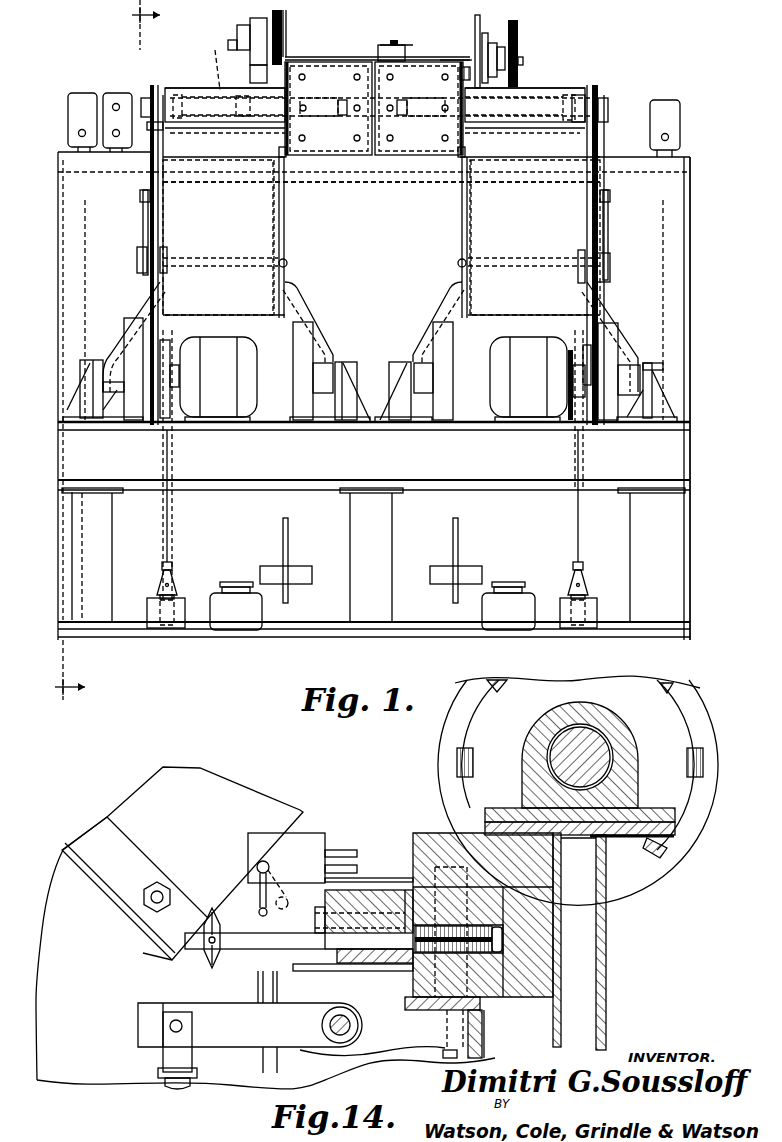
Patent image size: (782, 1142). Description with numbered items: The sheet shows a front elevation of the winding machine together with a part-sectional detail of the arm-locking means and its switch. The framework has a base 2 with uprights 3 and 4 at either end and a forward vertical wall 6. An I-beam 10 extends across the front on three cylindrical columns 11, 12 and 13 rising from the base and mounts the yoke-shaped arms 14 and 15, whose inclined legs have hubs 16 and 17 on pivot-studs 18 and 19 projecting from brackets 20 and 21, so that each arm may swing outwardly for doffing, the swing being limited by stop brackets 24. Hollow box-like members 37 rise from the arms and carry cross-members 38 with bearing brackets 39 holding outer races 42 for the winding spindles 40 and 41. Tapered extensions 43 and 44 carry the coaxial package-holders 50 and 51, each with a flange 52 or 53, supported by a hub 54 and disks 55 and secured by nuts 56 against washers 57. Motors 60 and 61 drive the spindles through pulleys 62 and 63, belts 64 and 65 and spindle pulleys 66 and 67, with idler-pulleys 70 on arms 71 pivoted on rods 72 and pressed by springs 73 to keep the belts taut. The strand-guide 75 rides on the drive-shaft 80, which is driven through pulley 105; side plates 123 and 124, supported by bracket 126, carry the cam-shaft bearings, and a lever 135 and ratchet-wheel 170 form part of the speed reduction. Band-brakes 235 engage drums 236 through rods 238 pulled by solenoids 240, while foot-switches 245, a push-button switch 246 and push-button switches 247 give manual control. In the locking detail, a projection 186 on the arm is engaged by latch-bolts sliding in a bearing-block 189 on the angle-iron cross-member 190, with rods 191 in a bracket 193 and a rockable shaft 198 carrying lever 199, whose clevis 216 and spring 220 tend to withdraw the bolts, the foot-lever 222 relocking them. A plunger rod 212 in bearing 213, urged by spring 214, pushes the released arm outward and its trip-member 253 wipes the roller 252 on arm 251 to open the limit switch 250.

In FIG. 1, the base 2 is at (300, 644).
In FIG. 1, the upright 3 is at (59, 364).
In FIG. 1, the upright 4 is at (690, 325).
In FIG. 1, the forward vertical wall 6 is at (100, 270).
In FIG. 1, the I-beam 10 is at (283, 474).
In FIG. 1, the cylindrical column 11 is at (100, 571).
In FIG. 1, the cylindrical column 12 is at (386, 562).
In FIG. 1, the cylindrical column 13 is at (640, 560).
In FIG. 1, the yoke-shaped arm 14 is at (460, 233).
In FIG. 1, the yoke-shaped arm 15 is at (288, 238).
In FIG. 14, the yoke-shaped arm 15 is at (608, 982).
In FIG. 1, the hub 16 is at (420, 355).
In FIG. 1, the hub 17 is at (118, 348).
In FIG. 1, the pivot-stud 18 is at (430, 390).
In FIG. 1, the pivot-stud 19 is at (112, 422).
In FIG. 1, the bracket 20 is at (398, 432).
In FIG. 1, the bracket 21 is at (90, 405).
In FIG. 1, the stop bracket 24 is at (133, 320).
In FIG. 1, the hollow box-like sheet-metal member 37 is at (284, 211).
In FIG. 14, the hollow box-like sheet-metal member 37 is at (607, 943).
In FIG. 1, the cross-member 38 is at (245, 130).
In FIG. 14, the cross-member 38 is at (683, 857).
In FIG. 1, the bearing bracket 39 is at (192, 90).
In FIG. 14, the bearing bracket 39 is at (620, 735).
In FIG. 1, the winding spindle 40 is at (577, 95).
In FIG. 1, the winding spindle 41 is at (236, 94).
In FIG. 14, the winding spindle 41 is at (598, 770).
In FIG. 1, the outer race 42 is at (172, 95).
In FIG. 1, the tapered extension 43 is at (445, 105).
In FIG. 1, the tapered extension 44 is at (313, 105).
In FIG. 1, the package-holder 50 is at (412, 143).
In FIG. 14, the package-holder 50 is at (712, 716).
In FIG. 1, the package-holder 51 is at (342, 142).
In FIG. 1, the flange 52 is at (461, 157).
In FIG. 14, the flange 52 is at (712, 758).
In FIG. 1, the flange 53 is at (285, 157).
In FIG. 1, the hub 54 is at (340, 112).
In FIG. 1, the disk 55 is at (316, 70).
In FIG. 1, the nut 56 is at (346, 113).
In FIG. 1, the washer 57 is at (343, 100).
In FIG. 1, the electric motor 60 is at (493, 400).
In FIG. 1, the electric motor 61 is at (256, 401).
In FIG. 1, the pulley 62 is at (585, 348).
In FIG. 1, the pulley 63 is at (147, 430).
In FIG. 1, the belt 64 is at (590, 233).
In FIG. 1, the belt 65 is at (159, 236).
In FIG. 1, the pulley 66 is at (606, 100).
In FIG. 1, the pulley 67 is at (152, 130).
In FIG. 1, the flanged idler-pulley 70 is at (152, 199).
In FIG. 1, the arm 71 is at (143, 230).
In FIG. 1, the rod 72 is at (215, 260).
In FIG. 1, the coiled spring 73 is at (168, 272).
In FIG. 1, the strand-guide 75 is at (404, 41).
In FIG. 1, the drive-shaft 80 is at (443, 57).
In FIG. 1, the pulley 105 is at (520, 40).
In FIG. 1, the vertical side plate 123 is at (480, 17).
In FIG. 1, the vertical side plate 124 is at (274, 22).
In FIG. 14, the vertical side plate 124 is at (128, 807).
In FIG. 14, the angle-iron bracket 126 is at (73, 843).
In FIG. 1, the eccentrically-operated lever 135 is at (236, 42).
In FIG. 1, the ratchet-wheel 170 is at (286, 28).
In FIG. 14, the lateral projection 186 is at (440, 835).
In FIG. 14, the bearing-block 189 is at (418, 986).
In FIG. 1, the angle-iron cross-member 190 is at (400, 183).
In FIG. 14, the angle-iron cross-member 190 is at (365, 965).
In FIG. 14, the rod 191 is at (447, 1046).
In FIG. 14, the rectangular-shaped bracket 193 is at (400, 1068).
In FIG. 14, the rockable shaft 198 is at (355, 1024).
In FIG. 14, the lever 199 is at (202, 1008).
In FIG. 14, the plunger rod 212 is at (253, 945).
In FIG. 14, the bearing 213 is at (368, 903).
In FIG. 14, the helical spring 214 is at (493, 955).
In FIG. 14, the clevis 216 is at (168, 1059).
In FIG. 14, the helical spring 220 is at (193, 1081).
In FIG. 1, the foot-lever 222 is at (302, 570).
In FIG. 1, the band-brake 235 is at (172, 352).
In FIG. 1, the drum 236 is at (177, 355).
In FIG. 1, the rod 238 is at (169, 528).
In FIG. 1, the solenoid 240 is at (182, 607).
In FIG. 1, the foot-switch 245 is at (236, 584).
In FIG. 1, the push-button switch 246 is at (141, 95).
In FIG. 1, the push-button switch 247 is at (77, 123).
In FIG. 14, the limit switch 250 is at (312, 840).
In FIG. 14, the rockable arm 251 is at (262, 885).
In FIG. 14, the roller 252 is at (265, 910).
In FIG. 14, the trip-member 253 is at (223, 919).